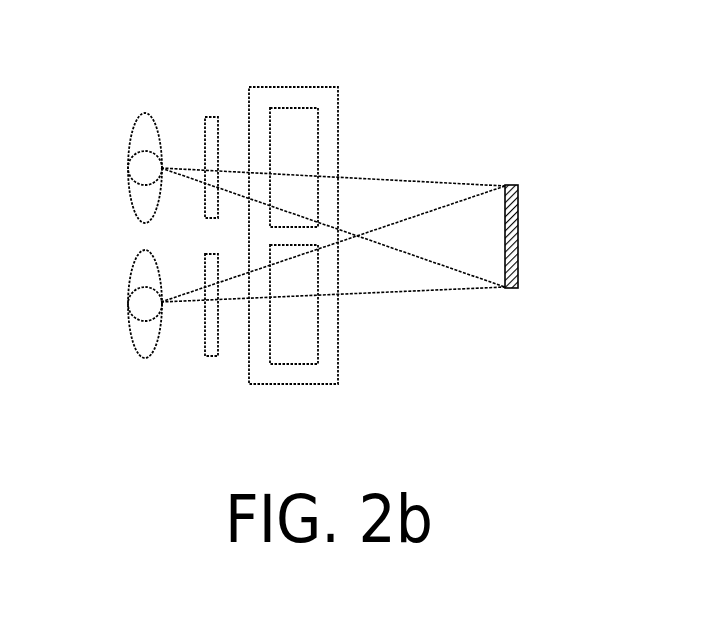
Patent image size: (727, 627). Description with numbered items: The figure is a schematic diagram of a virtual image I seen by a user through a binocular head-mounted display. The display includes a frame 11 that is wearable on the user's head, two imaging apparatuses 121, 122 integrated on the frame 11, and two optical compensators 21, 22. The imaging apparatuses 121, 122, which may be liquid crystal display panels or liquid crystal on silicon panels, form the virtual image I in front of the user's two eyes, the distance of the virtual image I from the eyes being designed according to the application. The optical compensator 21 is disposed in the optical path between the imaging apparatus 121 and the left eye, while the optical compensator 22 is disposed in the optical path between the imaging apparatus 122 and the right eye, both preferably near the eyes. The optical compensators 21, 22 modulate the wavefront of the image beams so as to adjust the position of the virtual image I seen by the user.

The frame 11 is at (301, 87).
The imaging apparatus 121 is at (314, 148).
The imaging apparatus 122 is at (308, 352).
The optical compensator 21 is at (200, 130).
The optical compensator 22 is at (205, 350).
The virtual image I is at (518, 235).